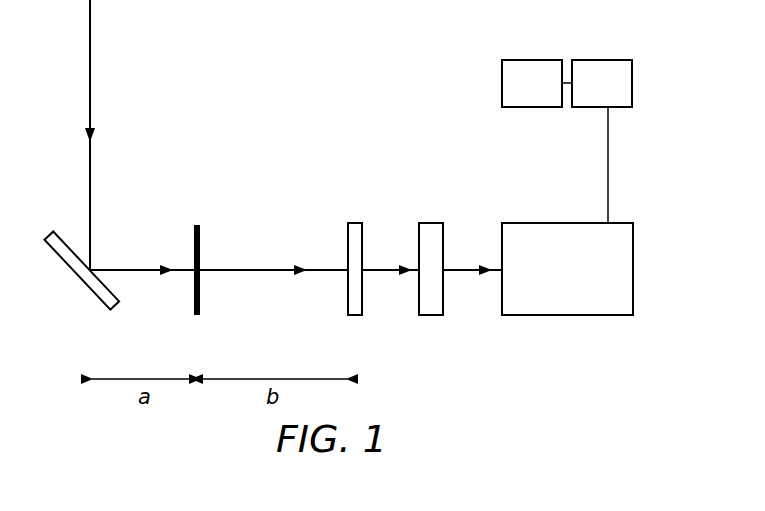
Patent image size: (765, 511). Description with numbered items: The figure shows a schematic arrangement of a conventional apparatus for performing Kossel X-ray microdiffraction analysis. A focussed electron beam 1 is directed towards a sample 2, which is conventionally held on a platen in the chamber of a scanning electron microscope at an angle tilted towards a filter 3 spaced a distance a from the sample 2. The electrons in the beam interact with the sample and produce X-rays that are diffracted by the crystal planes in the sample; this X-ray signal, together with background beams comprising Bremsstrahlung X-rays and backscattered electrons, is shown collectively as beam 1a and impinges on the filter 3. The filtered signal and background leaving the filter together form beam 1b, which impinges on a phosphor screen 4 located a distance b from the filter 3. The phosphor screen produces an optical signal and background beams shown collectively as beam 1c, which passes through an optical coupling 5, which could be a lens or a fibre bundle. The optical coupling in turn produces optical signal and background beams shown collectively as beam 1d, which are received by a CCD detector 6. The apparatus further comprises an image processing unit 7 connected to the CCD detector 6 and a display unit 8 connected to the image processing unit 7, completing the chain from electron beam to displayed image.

The focussed electron beam 1 is at (90, 62).
The X-ray signal and background beams 1a is at (150, 270).
The filtered signal and background beam 1b is at (277, 270).
The optical signal and background beams 1c is at (392, 270).
The optical signal and background beams 1d is at (474, 270).
The sample 2 is at (99, 300).
The filter 3 is at (197, 318).
The phosphor screen 4 is at (355, 316).
The optical coupling 5 is at (432, 316).
The CCD detector 6 is at (567, 316).
The image processing unit 7 is at (603, 60).
The display unit 8 is at (532, 60).